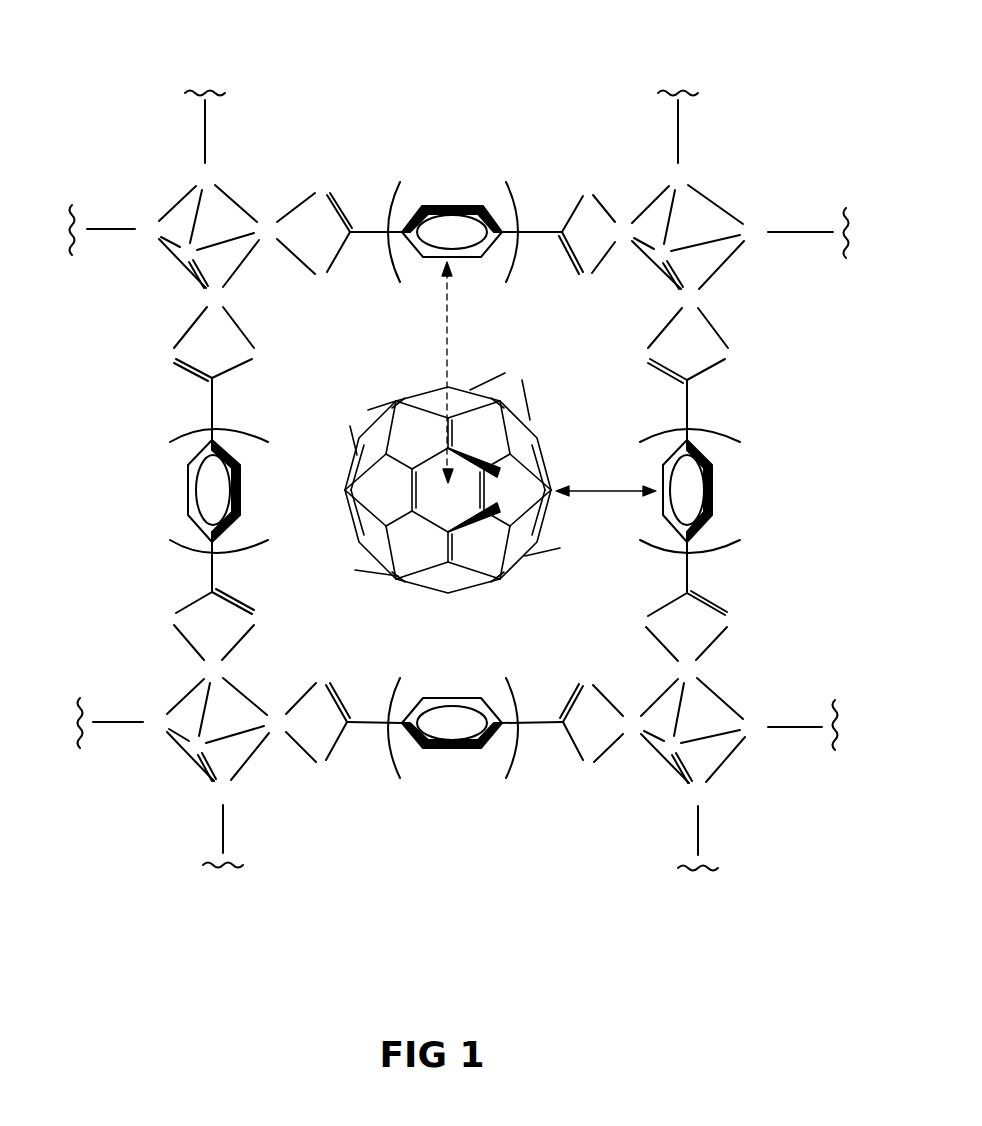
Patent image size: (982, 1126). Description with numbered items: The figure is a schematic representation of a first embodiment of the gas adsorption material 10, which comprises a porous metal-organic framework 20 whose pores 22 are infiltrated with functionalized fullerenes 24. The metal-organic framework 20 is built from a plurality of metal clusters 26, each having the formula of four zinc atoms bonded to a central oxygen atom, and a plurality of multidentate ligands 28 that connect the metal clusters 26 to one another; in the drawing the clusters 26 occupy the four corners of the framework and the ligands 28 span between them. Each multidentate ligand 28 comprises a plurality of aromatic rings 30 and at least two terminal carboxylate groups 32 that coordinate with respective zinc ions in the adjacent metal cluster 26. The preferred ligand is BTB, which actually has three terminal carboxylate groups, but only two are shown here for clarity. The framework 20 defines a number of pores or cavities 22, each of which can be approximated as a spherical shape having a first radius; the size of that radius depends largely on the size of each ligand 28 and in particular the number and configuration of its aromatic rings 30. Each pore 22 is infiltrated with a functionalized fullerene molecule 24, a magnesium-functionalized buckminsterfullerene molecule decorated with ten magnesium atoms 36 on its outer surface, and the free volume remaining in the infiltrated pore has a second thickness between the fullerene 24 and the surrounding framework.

The gas adsorption material 10 is at (776, 138).
The metal-organic framework 20 is at (713, 298).
The pore 22 is at (308, 354).
The functionalized fullerene 24 is at (408, 588).
The metal cluster 26 is at (172, 187).
The multidentate ligand 28 is at (435, 182).
The aromatic ring 30 is at (465, 207).
The terminal carboxylate group 32 is at (295, 198).
The magnesium atom 36 is at (547, 365).